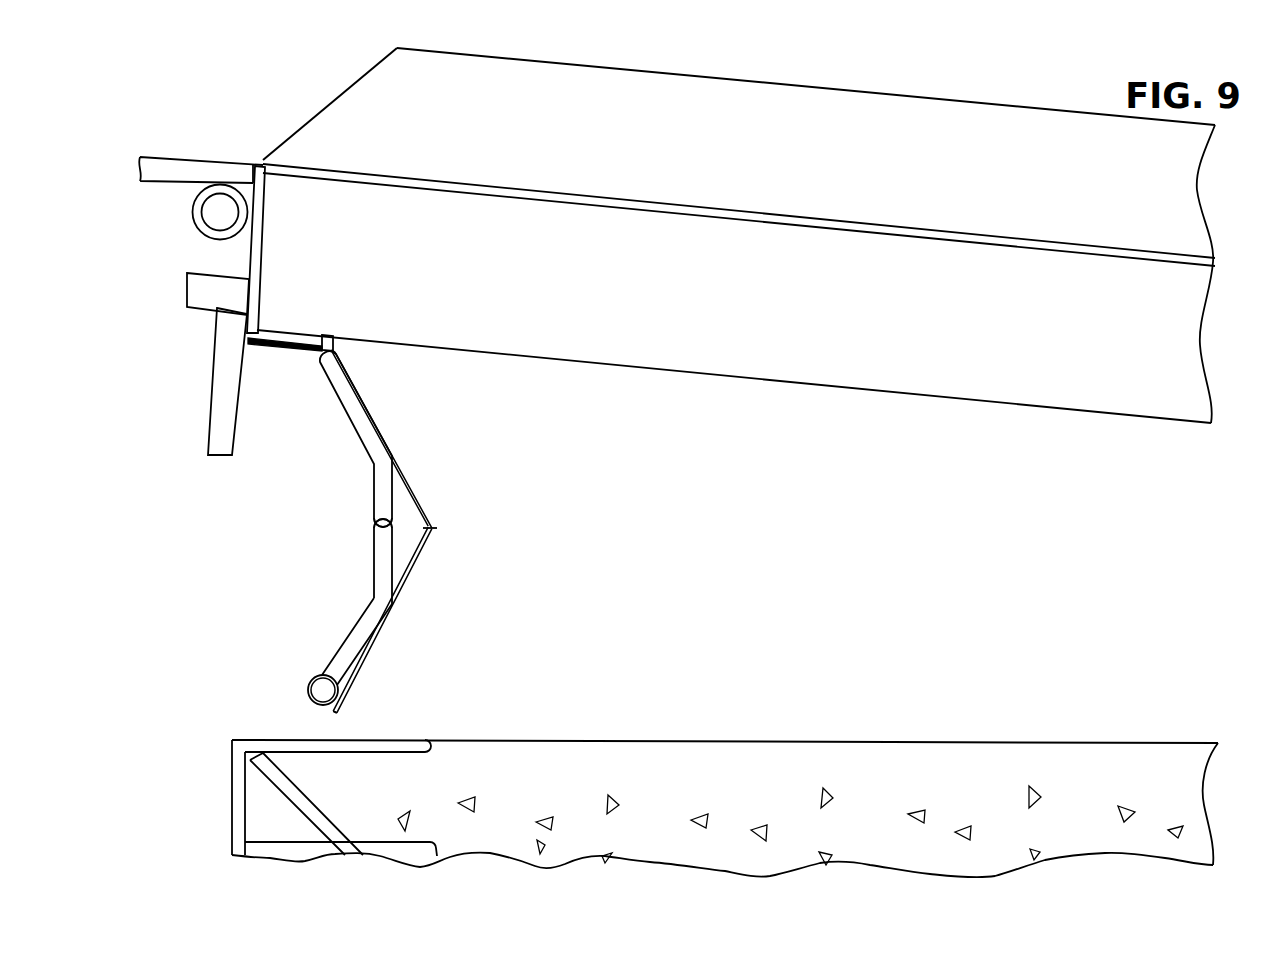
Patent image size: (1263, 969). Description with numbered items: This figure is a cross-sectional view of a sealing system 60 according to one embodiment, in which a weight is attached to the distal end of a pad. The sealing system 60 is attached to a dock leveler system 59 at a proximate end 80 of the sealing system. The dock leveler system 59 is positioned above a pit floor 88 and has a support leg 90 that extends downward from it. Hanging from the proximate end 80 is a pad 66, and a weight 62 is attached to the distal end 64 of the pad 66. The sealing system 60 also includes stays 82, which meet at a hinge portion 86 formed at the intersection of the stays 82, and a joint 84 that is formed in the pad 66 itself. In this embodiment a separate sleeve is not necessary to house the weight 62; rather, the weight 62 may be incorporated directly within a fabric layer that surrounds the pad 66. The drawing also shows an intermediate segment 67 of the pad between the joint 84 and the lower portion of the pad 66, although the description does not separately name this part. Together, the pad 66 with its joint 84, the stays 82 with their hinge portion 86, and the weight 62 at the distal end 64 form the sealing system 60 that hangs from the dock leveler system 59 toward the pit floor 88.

The dock leveler system 59 is at (795, 381).
The sealing system 60 is at (337, 486).
The weight 62 is at (310, 697).
The distal end 64 is at (330, 712).
The pad 66 is at (348, 650).
The intermediate arm segment 67 is at (375, 568).
The proximate end 80 is at (330, 337).
The stays 82 is at (383, 443).
The joint 84 is at (377, 532).
The hinge portion 86 is at (432, 522).
The pit floor 88 is at (668, 740).
The support leg 90 is at (210, 393).